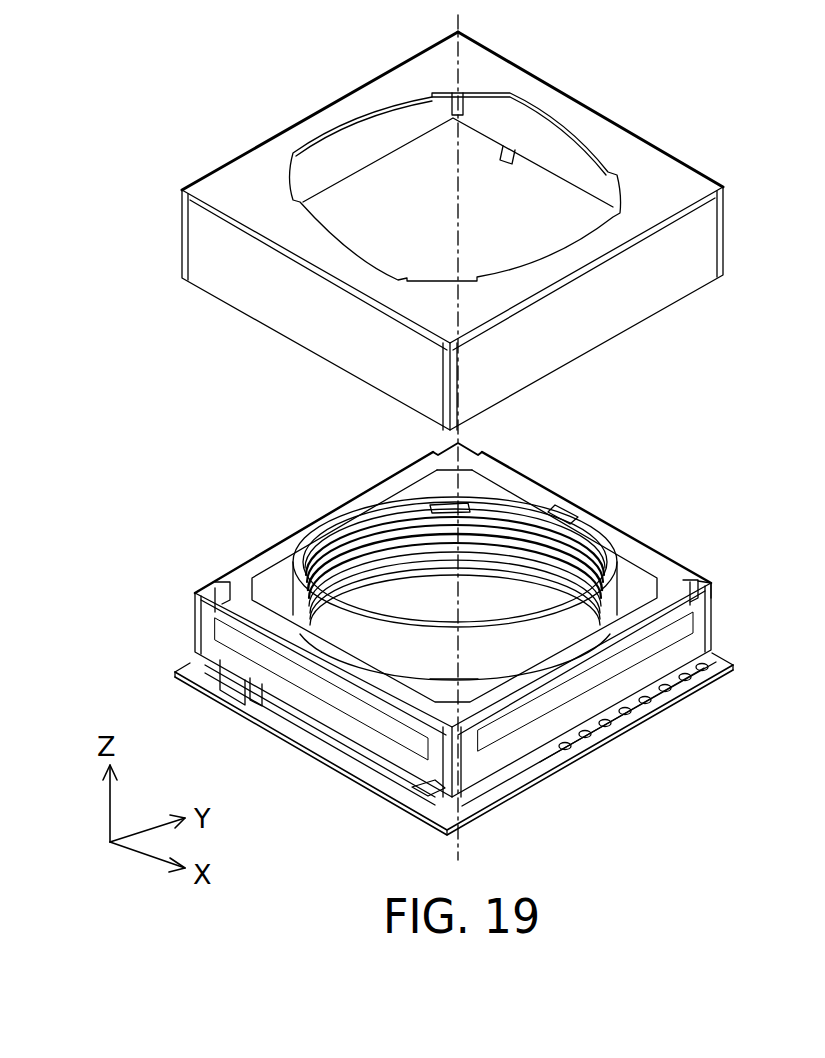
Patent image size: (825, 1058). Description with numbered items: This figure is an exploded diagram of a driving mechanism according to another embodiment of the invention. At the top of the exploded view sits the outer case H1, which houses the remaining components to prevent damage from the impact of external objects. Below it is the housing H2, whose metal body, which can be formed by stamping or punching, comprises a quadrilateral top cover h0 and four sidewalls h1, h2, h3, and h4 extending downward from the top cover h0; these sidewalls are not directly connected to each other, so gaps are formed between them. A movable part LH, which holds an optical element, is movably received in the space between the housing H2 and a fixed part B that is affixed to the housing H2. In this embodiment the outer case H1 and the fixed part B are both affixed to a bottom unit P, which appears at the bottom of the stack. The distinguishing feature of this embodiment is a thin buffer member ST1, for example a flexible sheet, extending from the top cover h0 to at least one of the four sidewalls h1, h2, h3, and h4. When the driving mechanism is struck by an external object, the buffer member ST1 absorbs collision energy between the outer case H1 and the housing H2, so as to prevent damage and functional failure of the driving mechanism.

The outer case H1 is at (620, 150).
The housing H2 is at (703, 627).
The movable part LH is at (372, 538).
The buffer member ST1 is at (568, 515).
The top cover h0 is at (697, 578).
The sidewall h1 is at (702, 584).
The sidewall h2 is at (603, 698).
The sidewall h3 is at (310, 708).
The sidewall h4 is at (207, 580).
The fixed part B is at (420, 787).
The bottom unit P is at (528, 789).